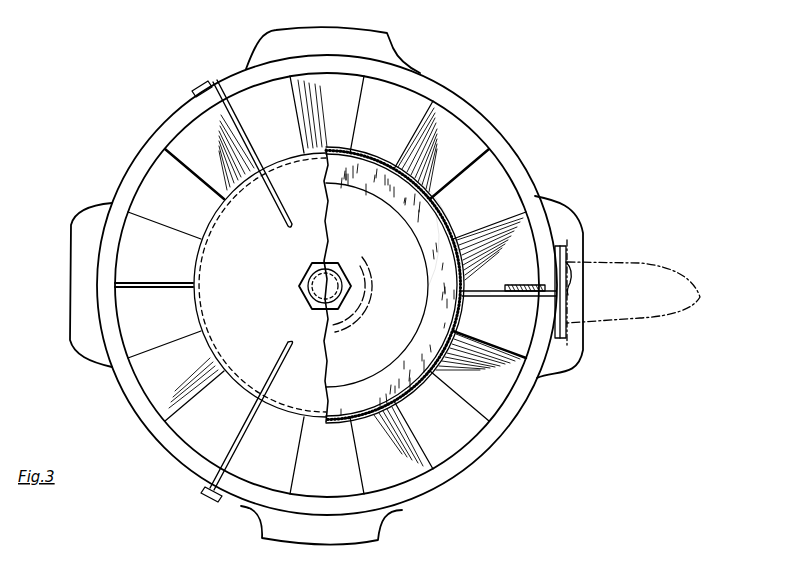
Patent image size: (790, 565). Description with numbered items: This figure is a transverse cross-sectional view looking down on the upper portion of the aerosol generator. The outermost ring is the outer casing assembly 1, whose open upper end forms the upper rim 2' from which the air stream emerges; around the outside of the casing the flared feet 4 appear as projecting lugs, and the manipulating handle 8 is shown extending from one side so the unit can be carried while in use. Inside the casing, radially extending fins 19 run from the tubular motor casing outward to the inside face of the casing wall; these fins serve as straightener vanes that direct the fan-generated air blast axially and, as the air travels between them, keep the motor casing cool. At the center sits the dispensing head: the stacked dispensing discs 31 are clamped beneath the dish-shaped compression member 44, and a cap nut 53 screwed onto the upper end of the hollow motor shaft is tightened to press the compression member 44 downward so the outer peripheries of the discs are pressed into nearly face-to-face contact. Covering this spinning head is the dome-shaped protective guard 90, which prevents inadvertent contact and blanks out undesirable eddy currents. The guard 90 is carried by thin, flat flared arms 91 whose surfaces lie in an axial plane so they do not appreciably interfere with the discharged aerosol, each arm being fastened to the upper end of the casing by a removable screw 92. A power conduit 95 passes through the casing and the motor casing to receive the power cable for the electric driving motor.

The outer casing assembly 1 is at (101, 378).
The upper rim 2' is at (327, 285).
The flared feet 4 is at (278, 38).
The manipulating handle 8 is at (654, 272).
The fins 19 is at (206, 190).
The dispensing discs 31 is at (424, 220).
The compression member 44 is at (408, 246).
The cap nut 53 is at (333, 268).
The dome-shaped protective guard 90 is at (385, 146).
The flared arms 91 is at (246, 136).
The removable screw 92 is at (202, 81).
The power conduit 95 is at (484, 305).